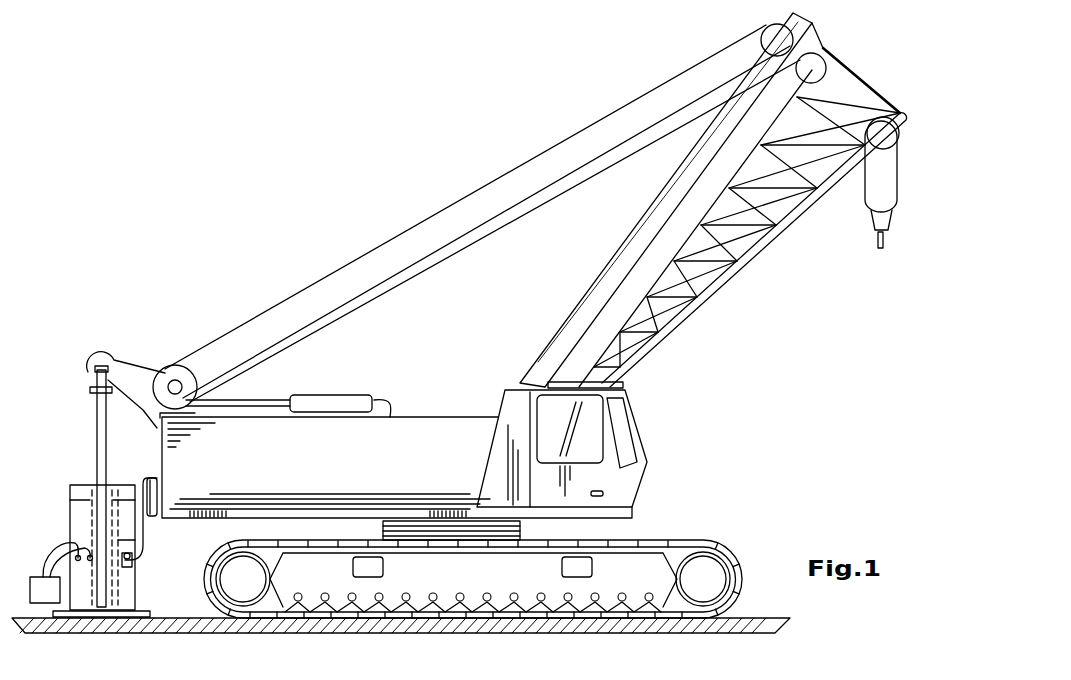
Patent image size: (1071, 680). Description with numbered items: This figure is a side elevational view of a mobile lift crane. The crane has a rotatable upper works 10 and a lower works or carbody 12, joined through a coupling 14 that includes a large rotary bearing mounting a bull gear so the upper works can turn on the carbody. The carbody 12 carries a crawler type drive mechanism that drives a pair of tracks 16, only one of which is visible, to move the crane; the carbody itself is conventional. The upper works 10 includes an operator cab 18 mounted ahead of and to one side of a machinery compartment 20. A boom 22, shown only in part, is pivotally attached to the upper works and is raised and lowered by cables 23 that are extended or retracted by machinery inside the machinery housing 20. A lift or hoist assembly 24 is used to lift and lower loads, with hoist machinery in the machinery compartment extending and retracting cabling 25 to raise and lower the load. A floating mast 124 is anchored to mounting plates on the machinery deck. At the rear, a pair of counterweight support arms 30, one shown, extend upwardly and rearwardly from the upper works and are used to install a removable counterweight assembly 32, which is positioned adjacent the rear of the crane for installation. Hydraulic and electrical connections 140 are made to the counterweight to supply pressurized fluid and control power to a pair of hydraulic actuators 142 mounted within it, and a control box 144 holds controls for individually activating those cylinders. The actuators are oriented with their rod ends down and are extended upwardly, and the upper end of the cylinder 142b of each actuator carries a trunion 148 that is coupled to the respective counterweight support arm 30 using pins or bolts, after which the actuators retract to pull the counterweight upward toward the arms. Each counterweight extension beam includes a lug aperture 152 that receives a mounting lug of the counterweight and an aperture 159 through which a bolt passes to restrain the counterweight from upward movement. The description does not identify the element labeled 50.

The upper works 10 is at (710, 410).
The carbody 12 is at (755, 556).
The coupling 14 is at (565, 527).
The tracks 16 is at (695, 541).
The operator cab 18 is at (633, 480).
The machinery compartment 20 is at (413, 393).
The boom 22 is at (740, 270).
The cables 23 is at (418, 222).
The hoist assembly 24 is at (853, 197).
The cabling 25 is at (517, 216).
The counterweight support arms 30 is at (118, 360).
The counterweight assembly 32 is at (78, 485).
The gantry 50 is at (218, 322).
The floating mast 124 is at (584, 306).
The hydraulic and electrical connections 140 is at (145, 538).
The hydraulic actuators 142 is at (120, 465).
The upper end of the cylinder 142b is at (97, 410).
The control box 144 is at (47, 600).
The trunion 148 is at (83, 350).
The lug aperture 152 is at (127, 568).
The aperture 159 is at (160, 500).